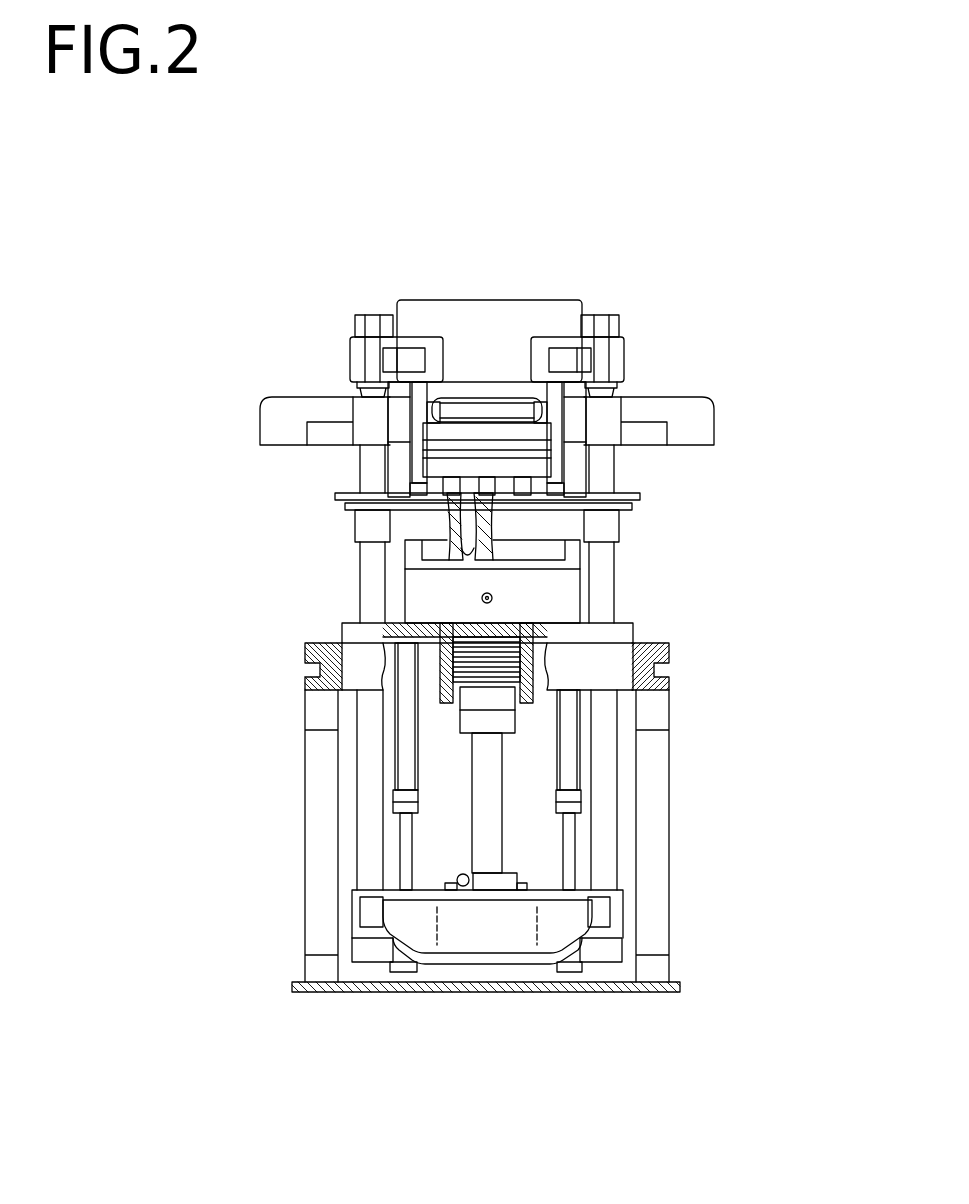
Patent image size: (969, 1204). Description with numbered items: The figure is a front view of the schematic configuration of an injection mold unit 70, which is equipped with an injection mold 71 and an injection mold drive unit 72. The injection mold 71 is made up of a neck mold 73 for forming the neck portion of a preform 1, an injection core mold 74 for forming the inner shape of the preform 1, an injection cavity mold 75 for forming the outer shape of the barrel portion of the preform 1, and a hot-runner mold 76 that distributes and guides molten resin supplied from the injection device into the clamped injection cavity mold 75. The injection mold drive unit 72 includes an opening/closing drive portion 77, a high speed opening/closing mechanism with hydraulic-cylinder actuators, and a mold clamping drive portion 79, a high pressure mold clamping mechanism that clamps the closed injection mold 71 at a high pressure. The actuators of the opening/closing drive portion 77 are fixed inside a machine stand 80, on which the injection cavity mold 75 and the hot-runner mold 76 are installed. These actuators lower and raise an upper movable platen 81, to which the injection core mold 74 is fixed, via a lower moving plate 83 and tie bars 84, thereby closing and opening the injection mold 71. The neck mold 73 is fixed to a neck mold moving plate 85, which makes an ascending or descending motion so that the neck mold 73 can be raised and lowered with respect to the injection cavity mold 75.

The preform 1 is at (452, 548).
The injection mold unit 70 is at (716, 245).
The injection mold 71 is at (319, 500).
The injection mold drive unit 72 is at (699, 922).
The neck mold 73 is at (487, 513).
The injection core mold 74 is at (450, 512).
The injection cavity mold 75 is at (547, 552).
The hot-runner mold 76 is at (540, 607).
The opening/closing drive portion 77 is at (397, 780).
The mold clamping drive portion 79 is at (440, 693).
The machine stand 80 is at (342, 629).
The upper movable platen 81 is at (548, 308).
The lower moving plate 83 is at (517, 937).
The tie bars 84 is at (600, 743).
The neck mold moving plate 85 is at (643, 497).